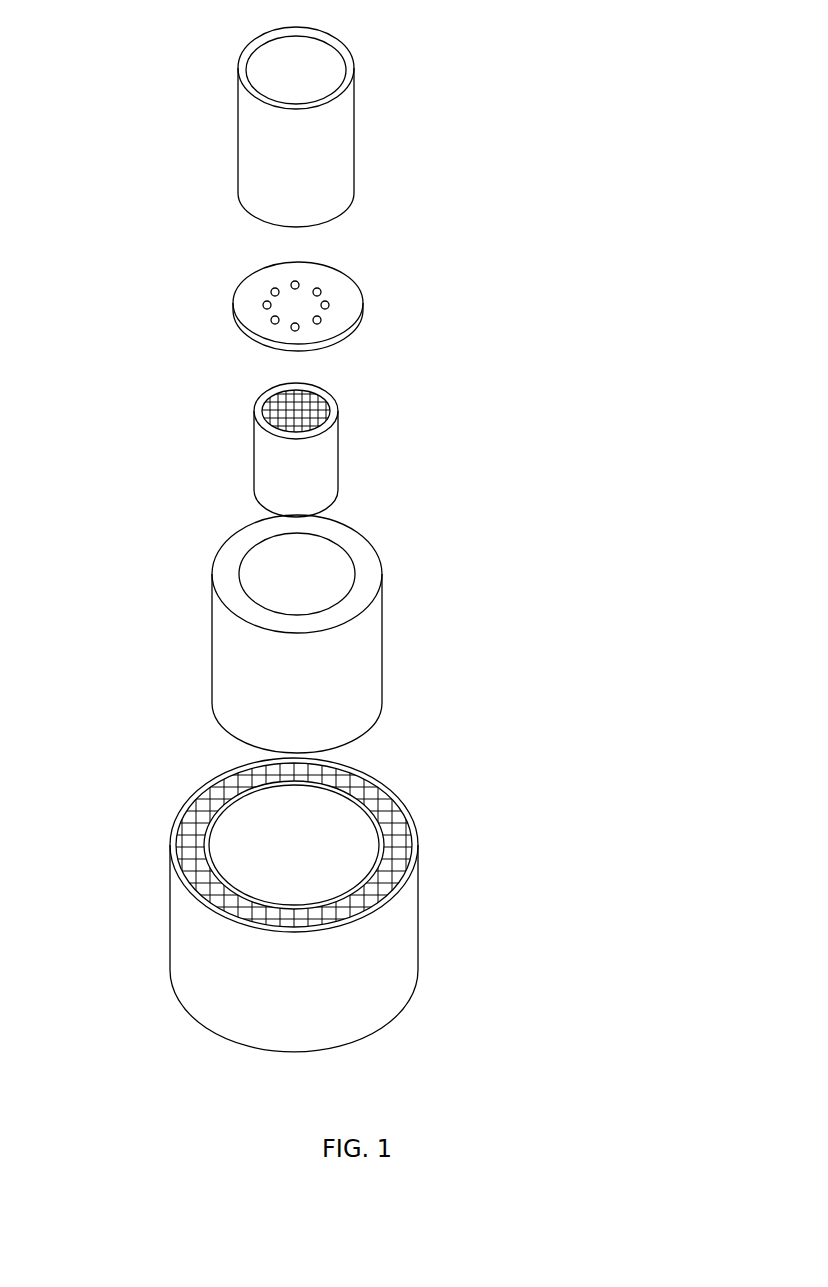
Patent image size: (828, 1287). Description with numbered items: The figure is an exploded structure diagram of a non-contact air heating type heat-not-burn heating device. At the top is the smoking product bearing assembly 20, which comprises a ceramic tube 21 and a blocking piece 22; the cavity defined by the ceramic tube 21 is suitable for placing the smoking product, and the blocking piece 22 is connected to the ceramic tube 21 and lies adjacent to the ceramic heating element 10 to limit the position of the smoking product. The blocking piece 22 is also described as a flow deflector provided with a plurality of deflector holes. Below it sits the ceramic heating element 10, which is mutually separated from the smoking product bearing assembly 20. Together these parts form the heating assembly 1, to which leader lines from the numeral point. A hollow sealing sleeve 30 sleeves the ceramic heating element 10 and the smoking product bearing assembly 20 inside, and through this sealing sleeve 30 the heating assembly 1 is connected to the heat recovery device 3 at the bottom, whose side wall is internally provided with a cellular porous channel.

The heating assembly 1 is at (537, 340).
The smoking product bearing assembly 20 is at (223, 295).
The ceramic tube 21 is at (380, 133).
The blocking piece 22 is at (367, 303).
The ceramic heating element 10 is at (357, 462).
The sealing sleeve 30 is at (402, 630).
The heat recovery device 3 is at (435, 888).